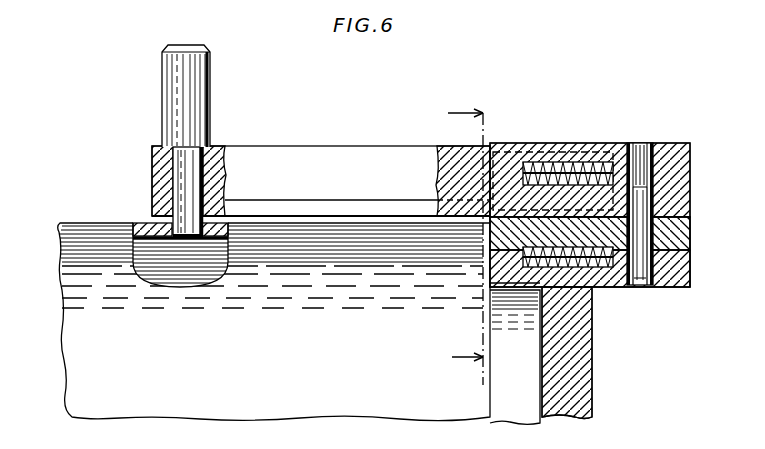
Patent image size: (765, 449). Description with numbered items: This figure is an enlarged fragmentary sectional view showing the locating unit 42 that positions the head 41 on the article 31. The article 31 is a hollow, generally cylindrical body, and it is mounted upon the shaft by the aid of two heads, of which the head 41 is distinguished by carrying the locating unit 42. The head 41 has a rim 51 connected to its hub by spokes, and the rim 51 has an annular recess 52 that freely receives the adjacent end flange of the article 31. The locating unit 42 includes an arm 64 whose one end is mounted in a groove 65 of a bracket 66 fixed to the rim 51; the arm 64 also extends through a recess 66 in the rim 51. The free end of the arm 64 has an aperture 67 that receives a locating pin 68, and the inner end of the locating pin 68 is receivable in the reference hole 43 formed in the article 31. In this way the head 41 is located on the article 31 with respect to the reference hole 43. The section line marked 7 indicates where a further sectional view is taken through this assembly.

The article 31 is at (70, 357).
The head 41 is at (597, 358).
The locating unit 42 is at (628, 140).
The reference hole 43 is at (172, 218).
The rim 51 is at (495, 284).
The annular recess 52 is at (520, 292).
The arm 64 is at (346, 158).
The groove 65 is at (510, 218).
The bracket 66 is at (684, 232).
The aperture 67 is at (207, 195).
The locating pin 68 is at (175, 117).
The section line 7- 7 is at (459, 240).